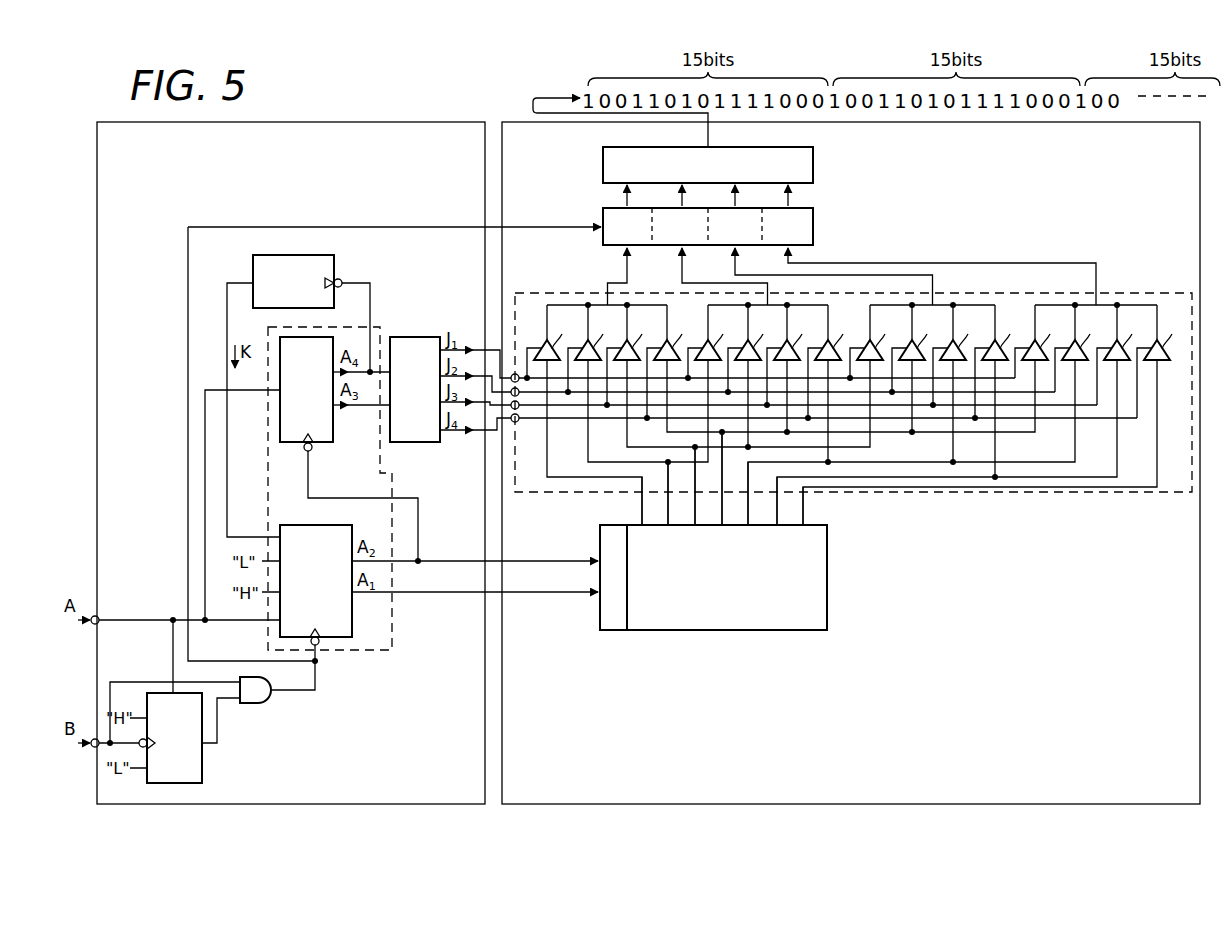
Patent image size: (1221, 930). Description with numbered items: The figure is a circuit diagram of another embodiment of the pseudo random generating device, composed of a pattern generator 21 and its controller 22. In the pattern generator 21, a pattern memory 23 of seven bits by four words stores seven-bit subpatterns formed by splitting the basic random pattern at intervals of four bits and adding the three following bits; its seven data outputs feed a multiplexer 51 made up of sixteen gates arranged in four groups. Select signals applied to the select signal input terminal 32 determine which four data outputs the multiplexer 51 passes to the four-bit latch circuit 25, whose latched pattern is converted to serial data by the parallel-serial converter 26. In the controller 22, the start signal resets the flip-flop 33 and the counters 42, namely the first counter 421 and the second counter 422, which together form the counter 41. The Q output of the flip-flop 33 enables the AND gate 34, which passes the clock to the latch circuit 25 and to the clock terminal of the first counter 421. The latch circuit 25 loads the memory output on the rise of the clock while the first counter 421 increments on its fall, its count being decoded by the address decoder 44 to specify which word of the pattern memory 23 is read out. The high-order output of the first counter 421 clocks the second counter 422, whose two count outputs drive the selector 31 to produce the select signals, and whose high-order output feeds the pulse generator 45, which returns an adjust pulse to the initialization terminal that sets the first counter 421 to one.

The pattern generator 21 is at (512, 120).
The controller 22 is at (412, 120).
The pattern memory 23 is at (743, 560).
The latch circuit 25 is at (813, 225).
The parallel-serial converter 26 is at (813, 155).
The selector 31 is at (415, 337).
The select signal input terminal 32 is at (522, 425).
The flip-flop 33 is at (202, 768).
The AND gate 34 is at (258, 703).
The 2^n counter 41 is at (355, 655).
The counters 42 is at (374, 491).
The 2^(n-m) counter 421 is at (352, 608).
The 2^m counter 422 is at (335, 430).
The address decoder 44 is at (600, 612).
The pulse generator 45 is at (334, 262).
The multiplexer 51 is at (1105, 500).